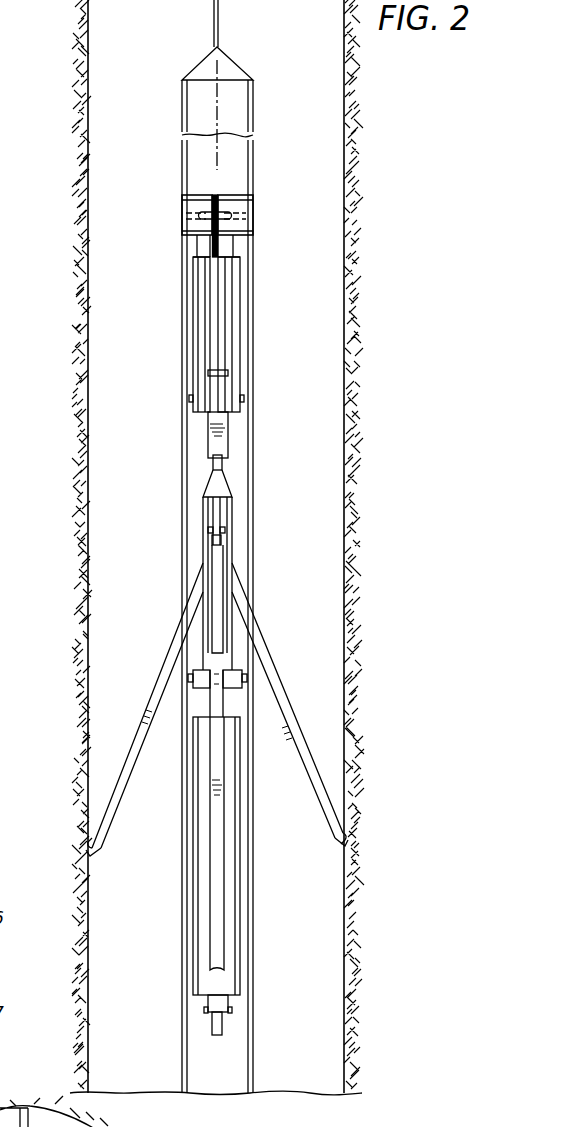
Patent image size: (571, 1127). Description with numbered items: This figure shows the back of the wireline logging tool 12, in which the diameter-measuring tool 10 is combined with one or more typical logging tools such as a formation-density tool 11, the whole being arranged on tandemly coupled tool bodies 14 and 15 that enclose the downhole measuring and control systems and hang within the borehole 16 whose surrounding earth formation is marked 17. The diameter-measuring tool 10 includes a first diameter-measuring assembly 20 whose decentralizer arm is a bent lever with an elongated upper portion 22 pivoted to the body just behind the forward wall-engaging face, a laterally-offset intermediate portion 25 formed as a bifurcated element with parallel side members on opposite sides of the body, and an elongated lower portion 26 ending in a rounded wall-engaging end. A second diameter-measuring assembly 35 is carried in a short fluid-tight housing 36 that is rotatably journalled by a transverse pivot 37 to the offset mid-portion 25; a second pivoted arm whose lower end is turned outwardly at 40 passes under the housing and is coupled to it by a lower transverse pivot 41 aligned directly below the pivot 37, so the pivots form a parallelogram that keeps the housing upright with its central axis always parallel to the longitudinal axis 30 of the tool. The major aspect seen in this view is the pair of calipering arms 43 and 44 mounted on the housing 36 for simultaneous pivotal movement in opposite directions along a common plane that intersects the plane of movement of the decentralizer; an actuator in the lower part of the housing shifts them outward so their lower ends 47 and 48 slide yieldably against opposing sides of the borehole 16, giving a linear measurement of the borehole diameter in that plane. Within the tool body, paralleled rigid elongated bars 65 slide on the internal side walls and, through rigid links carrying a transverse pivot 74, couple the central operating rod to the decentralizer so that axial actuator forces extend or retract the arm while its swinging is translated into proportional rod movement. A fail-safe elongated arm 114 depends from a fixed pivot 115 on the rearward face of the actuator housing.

The diameter-measuring tool 10 is at (217, 546).
The formation-density tool 11 is at (261, 541).
The wireline logging tool 12 is at (217, 97).
The tool body 14 is at (243, 96).
The tool body 15 is at (240, 1062).
The borehole 16 is at (344, 352).
The earth formation 17 is at (391, 632).
The first diameter-measuring assembly 20 is at (212, 303).
The elongated upper portion 22 is at (218, 438).
The laterally-offset intermediate portion 25 is at (243, 682).
The elongated lower portion 26 is at (218, 890).
The longitudinal axis 30 is at (215, 120).
The second diameter-measuring assembly 35 is at (217, 718).
The fluid-tight housing 36 is at (250, 856).
The transverse pivot 37 is at (192, 678).
The outwardly turned lower end 40 is at (213, 1026).
The transverse pivot 41 is at (232, 1013).
The calipering arm 43 is at (116, 721).
The calipering arm 44 is at (318, 715).
The lower end of calipering arm 47 is at (84, 858).
The lower end of calipering arm 48 is at (348, 842).
The paralleled rigid elongated bars 65 is at (240, 278).
The transverse pivot 74 is at (224, 364).
The elongated arm 114 is at (212, 245).
The fixed pivot 115 is at (186, 213).